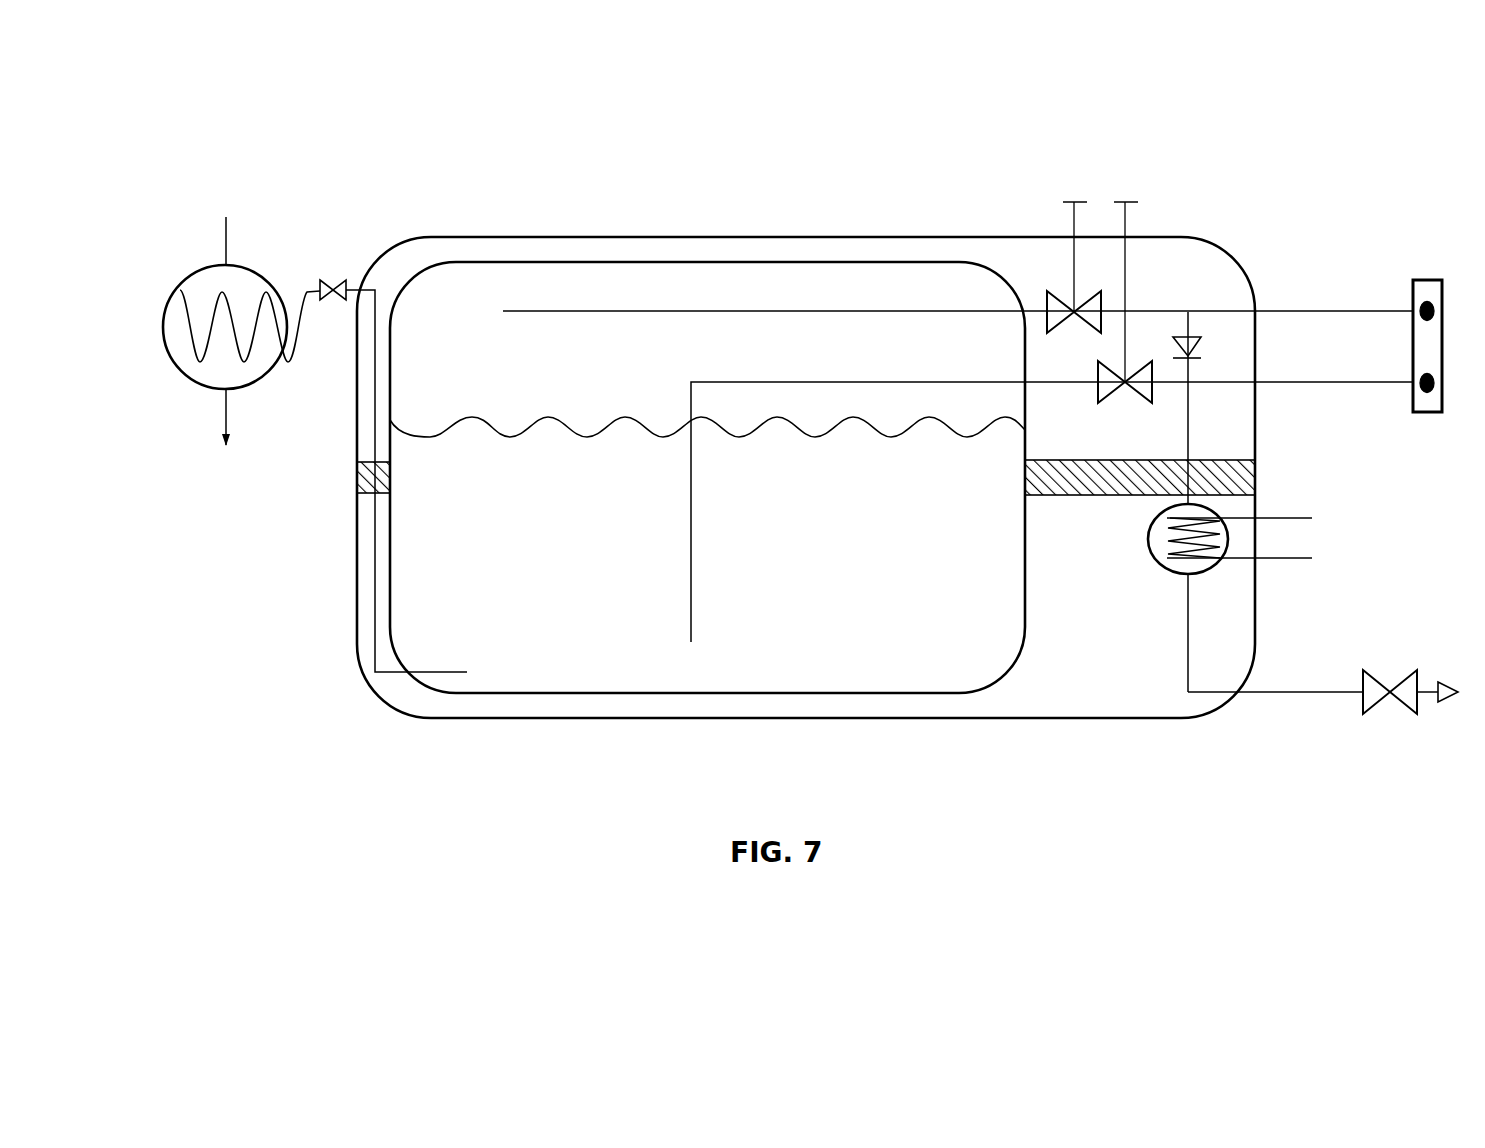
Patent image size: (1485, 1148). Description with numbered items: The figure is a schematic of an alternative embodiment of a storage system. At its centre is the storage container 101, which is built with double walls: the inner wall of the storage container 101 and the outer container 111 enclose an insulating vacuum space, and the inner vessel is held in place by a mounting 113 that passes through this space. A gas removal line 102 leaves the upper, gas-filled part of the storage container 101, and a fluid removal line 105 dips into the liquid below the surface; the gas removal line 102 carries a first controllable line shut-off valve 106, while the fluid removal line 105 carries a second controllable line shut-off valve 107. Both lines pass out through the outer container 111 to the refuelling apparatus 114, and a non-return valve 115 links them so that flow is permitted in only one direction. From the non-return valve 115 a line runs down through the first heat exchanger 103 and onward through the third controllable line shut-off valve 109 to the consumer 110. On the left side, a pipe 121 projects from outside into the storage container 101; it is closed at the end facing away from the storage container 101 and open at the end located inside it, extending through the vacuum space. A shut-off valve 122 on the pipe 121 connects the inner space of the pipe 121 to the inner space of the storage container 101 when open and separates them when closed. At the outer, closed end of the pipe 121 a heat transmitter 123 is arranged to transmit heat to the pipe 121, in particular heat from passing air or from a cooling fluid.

The storage container 101 is at (610, 261).
The gas removal line 102 is at (818, 309).
The first heat exchanger 103 is at (1222, 569).
The fluid removal line 105 is at (881, 378).
The first controllable line shut-off valve 106 is at (1062, 280).
The second controllable line shut-off valve 107 is at (1095, 399).
The third controllable line shut-off valve 109 is at (1370, 719).
The consumer 110 is at (1438, 710).
The outer container 111 is at (568, 235).
The mounting 113 is at (356, 477).
The refuelling apparatus 114 is at (1434, 277).
The non-return valve 115 is at (1195, 331).
The pipe 121 is at (190, 348).
The shut-off valve 122 is at (326, 272).
The heat transmitter 123 is at (182, 282).